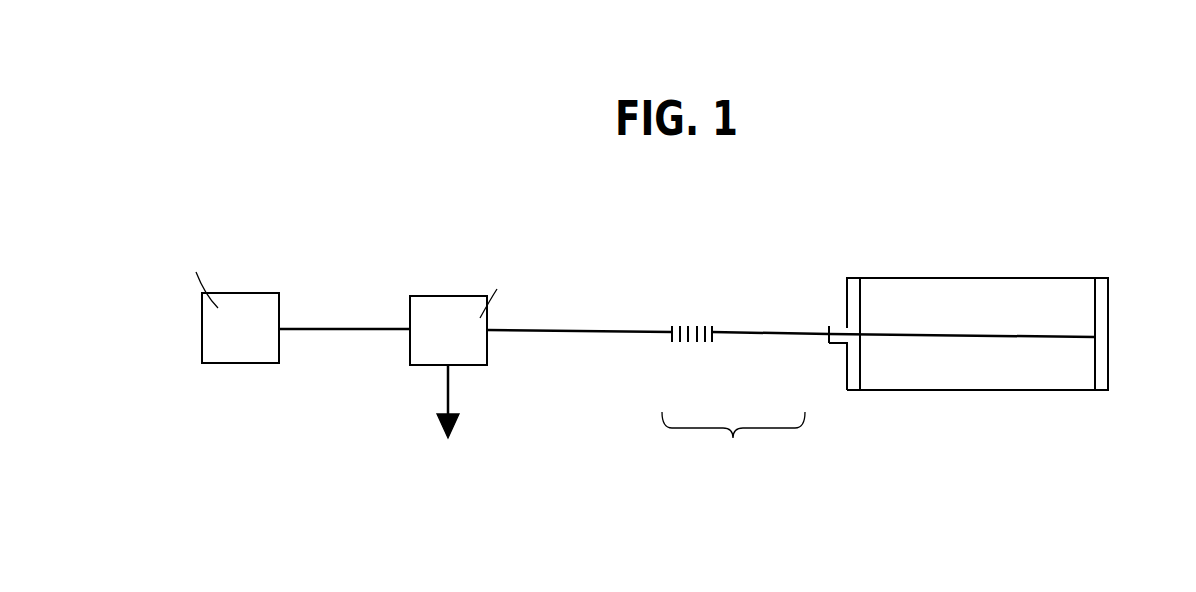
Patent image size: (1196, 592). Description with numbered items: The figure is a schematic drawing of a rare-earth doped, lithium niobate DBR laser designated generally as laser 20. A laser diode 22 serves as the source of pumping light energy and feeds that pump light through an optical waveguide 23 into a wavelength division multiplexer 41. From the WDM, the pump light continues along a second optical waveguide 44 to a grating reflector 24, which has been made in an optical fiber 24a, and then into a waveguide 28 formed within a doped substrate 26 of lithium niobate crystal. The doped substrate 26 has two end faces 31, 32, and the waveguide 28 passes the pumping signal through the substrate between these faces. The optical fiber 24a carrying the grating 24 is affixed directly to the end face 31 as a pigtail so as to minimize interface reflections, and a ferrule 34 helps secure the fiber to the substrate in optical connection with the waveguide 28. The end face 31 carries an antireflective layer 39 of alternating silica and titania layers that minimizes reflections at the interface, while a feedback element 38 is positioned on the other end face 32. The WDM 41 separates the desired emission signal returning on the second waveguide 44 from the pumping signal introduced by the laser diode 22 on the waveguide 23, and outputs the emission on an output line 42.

The laser 20 is at (330, 223).
The laser diode 22 is at (223, 364).
The optical waveguide 23 is at (352, 327).
The grating reflector 24 is at (696, 345).
The optical fiber 24a is at (754, 330).
The doped substrate 26 is at (978, 393).
The waveguide 28 is at (992, 333).
The end face 31 is at (845, 365).
The end face 32 is at (1108, 353).
The ferrule 34 is at (835, 323).
The feedback element 38 is at (1100, 290).
The antireflective layer 39 is at (853, 280).
The wavelength division multiplexer 41 is at (450, 296).
The output line 42 is at (446, 390).
The second optical waveguide 44 is at (545, 338).